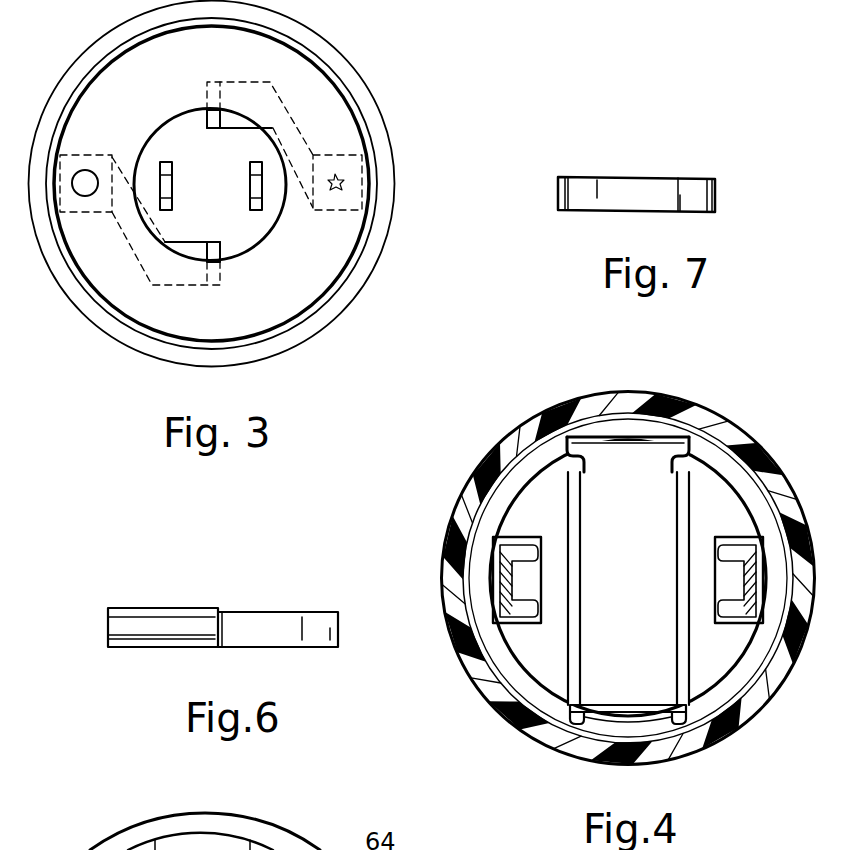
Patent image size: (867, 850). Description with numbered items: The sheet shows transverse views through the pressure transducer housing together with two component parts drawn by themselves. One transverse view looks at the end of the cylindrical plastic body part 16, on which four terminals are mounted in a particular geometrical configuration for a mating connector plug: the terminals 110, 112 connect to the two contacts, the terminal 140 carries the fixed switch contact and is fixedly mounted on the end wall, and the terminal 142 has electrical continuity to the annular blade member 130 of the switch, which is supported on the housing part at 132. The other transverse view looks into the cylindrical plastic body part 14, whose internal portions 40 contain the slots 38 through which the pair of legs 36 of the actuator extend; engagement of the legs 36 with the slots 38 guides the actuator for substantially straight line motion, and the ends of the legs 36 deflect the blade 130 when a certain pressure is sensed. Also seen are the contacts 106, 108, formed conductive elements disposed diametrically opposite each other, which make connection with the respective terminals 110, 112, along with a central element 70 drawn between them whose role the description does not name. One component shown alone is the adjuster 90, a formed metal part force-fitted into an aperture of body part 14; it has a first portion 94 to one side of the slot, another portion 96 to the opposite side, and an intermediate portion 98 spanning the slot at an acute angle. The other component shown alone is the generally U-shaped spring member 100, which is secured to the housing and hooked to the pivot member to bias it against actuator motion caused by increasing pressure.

In FIG. 3, the annular blade member 130 is at (325, 77).
In FIG. 3, the blade support 132 is at (346, 180).
In FIG. 3, the terminal 142 is at (212, 128).
In FIG. 3, the terminal 110 is at (172, 182).
In FIG. 3, the terminal 112 is at (250, 182).
In FIG. 3, the terminal 140 is at (190, 242).
In FIG. 7, the spring member 100 is at (625, 177).
In FIG. 6, the adjuster 90 is at (239, 613).
In FIG. 6, the first portion 94 is at (147, 608).
In FIG. 6, the another portion 96 is at (297, 626).
In FIG. 6, the intermediate portion 98 is at (265, 638).
In FIG. 4, the cylindrical plastic body part 14 is at (639, 578).
In FIG. 4, the cylindrical plastic body part 16 is at (763, 682).
In FIG. 4, the internal portions 40 is at (530, 503).
In FIG. 4, the legs 36 is at (633, 545).
In FIG. 4, the slots 38 is at (727, 587).
In FIG. 4, the bracket 70 is at (682, 542).
In FIG. 4, the contact 106 is at (643, 440).
In FIG. 4, the contact 108 is at (610, 707).